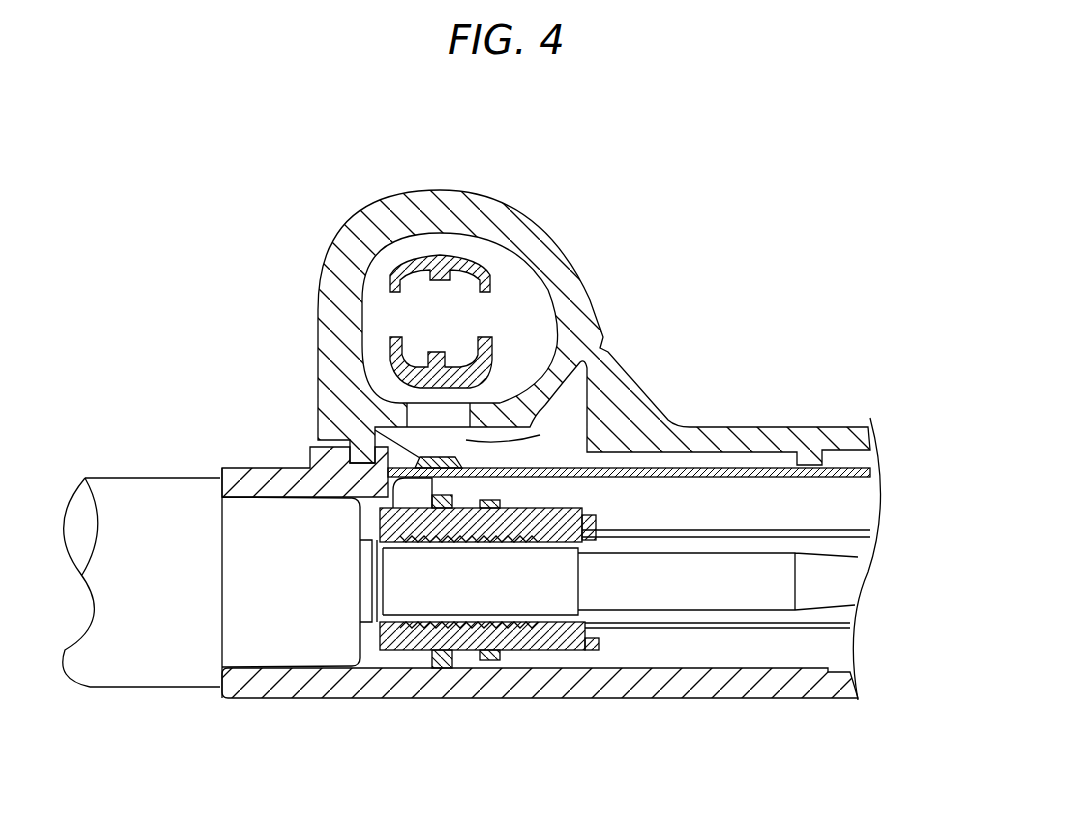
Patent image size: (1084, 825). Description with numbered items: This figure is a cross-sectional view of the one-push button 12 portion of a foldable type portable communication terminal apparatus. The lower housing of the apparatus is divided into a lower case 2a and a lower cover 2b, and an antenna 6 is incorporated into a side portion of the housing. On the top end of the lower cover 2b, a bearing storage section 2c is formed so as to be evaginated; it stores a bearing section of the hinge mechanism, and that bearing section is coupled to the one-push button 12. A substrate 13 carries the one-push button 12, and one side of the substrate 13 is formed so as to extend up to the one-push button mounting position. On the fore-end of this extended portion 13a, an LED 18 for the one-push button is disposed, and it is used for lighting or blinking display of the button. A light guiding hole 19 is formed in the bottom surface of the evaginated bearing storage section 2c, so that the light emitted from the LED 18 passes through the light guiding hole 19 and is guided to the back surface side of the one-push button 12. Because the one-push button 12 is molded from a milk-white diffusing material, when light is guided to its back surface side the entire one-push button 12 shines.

The lower case 2a is at (738, 703).
The lower cover 2b is at (748, 427).
The bearing storage section 2c is at (594, 299).
The antenna 6 is at (150, 628).
The one-push button 12 is at (487, 360).
The substrate 13 is at (853, 475).
The extended portion 13a is at (515, 478).
The LED 18 is at (430, 457).
The light guiding hole 19 is at (540, 435).